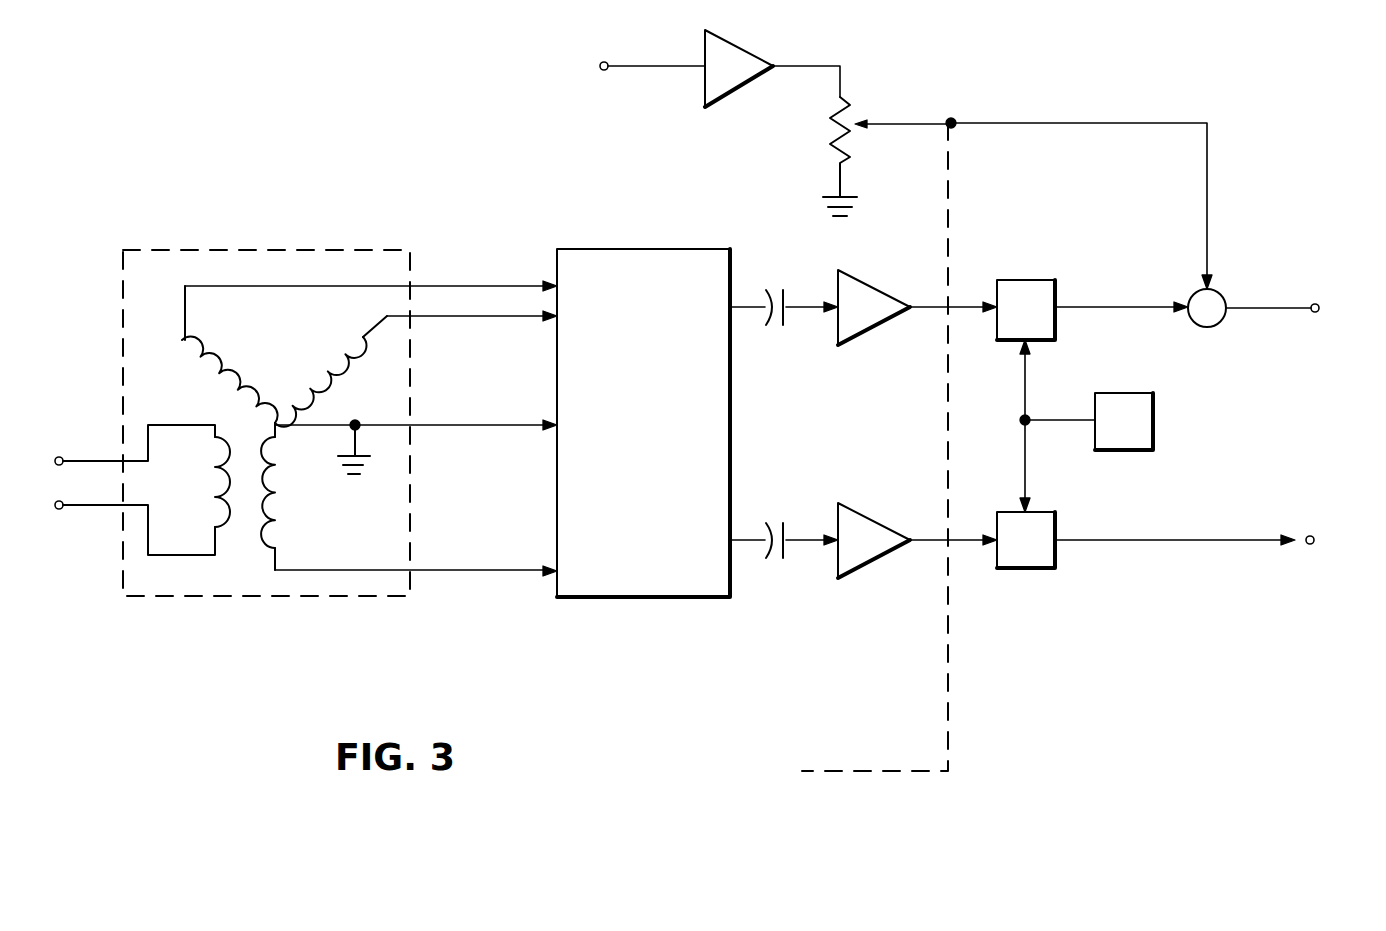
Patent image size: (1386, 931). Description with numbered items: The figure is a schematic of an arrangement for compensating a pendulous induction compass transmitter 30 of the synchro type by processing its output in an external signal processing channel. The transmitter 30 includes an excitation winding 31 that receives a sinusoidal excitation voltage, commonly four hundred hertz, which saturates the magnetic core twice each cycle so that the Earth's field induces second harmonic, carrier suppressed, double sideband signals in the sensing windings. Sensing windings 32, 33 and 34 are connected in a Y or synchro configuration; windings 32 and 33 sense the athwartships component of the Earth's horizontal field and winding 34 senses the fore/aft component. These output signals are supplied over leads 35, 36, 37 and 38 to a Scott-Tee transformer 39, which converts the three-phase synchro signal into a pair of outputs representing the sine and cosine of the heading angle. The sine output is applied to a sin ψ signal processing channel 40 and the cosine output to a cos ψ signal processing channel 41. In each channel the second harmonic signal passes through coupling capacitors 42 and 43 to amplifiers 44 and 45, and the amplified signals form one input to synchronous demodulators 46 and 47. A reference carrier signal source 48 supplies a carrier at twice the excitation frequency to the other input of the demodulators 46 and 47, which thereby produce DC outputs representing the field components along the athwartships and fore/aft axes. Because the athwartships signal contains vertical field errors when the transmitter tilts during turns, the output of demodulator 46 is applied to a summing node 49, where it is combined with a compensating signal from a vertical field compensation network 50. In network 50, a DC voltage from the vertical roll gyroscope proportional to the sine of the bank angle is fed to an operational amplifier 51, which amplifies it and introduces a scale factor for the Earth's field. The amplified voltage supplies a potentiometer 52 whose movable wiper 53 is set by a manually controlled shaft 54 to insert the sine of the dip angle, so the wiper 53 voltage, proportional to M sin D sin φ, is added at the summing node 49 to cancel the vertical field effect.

The pendulous induction compass transmitter 30 is at (270, 598).
The excitation winding 31 is at (216, 490).
The sensing winding 32 is at (347, 370).
The sensing winding 33 is at (236, 383).
The sensing winding 34 is at (262, 540).
The lead 35 is at (497, 262).
The lead 36 is at (453, 317).
The lead 37 is at (455, 426).
The lead 38 is at (497, 543).
The Scott-Tee transformer 39 is at (637, 249).
The sin ψ signal processing channel 40 is at (1124, 358).
The cos ψ signal processing channel 41 is at (1040, 613).
The coupling capacitor 42 is at (786, 298).
The coupling capacitor 43 is at (786, 552).
The amplifier 44 is at (850, 346).
The amplifier 45 is at (853, 572).
The synchronous demodulator 46 is at (1020, 280).
The synchronous demodulator 47 is at (1055, 560).
The reference carrier signal source 48 is at (1153, 432).
The summing node 49 is at (1220, 323).
The vertical field compensation network 50 is at (936, 62).
The operational amplifier 51 is at (745, 52).
The potentiometer 52 is at (822, 135).
The movable wiper 53 is at (862, 126).
The shaft 54 is at (952, 186).